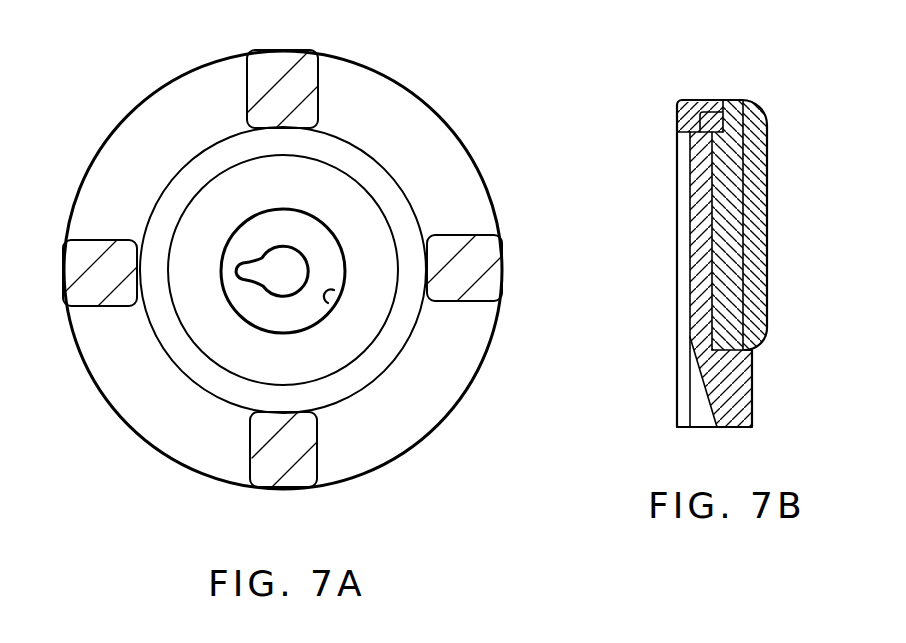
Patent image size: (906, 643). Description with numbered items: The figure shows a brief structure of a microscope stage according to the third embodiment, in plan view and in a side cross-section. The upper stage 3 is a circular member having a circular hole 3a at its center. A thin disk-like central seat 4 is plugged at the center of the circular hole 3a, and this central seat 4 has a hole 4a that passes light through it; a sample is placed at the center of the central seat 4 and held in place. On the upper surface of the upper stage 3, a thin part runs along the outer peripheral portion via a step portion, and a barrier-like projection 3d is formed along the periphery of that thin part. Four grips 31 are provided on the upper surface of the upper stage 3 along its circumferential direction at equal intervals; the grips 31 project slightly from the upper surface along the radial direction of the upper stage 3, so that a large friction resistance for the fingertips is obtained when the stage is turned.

In FIG. 7A, the upper stage 3 is at (190, 177).
In FIG. 7B, the upper stage 3 is at (686, 112).
In FIG. 7A, the circular hole 3a is at (268, 265).
In FIG. 7B, the projection 3d is at (715, 122).
In FIG. 7A, the central seat 4 is at (333, 353).
In FIG. 7A, the hole 4a is at (333, 300).
In FIG. 7A, the grips 31 is at (307, 73).
In FIG. 7B, the grips 31 is at (738, 140).